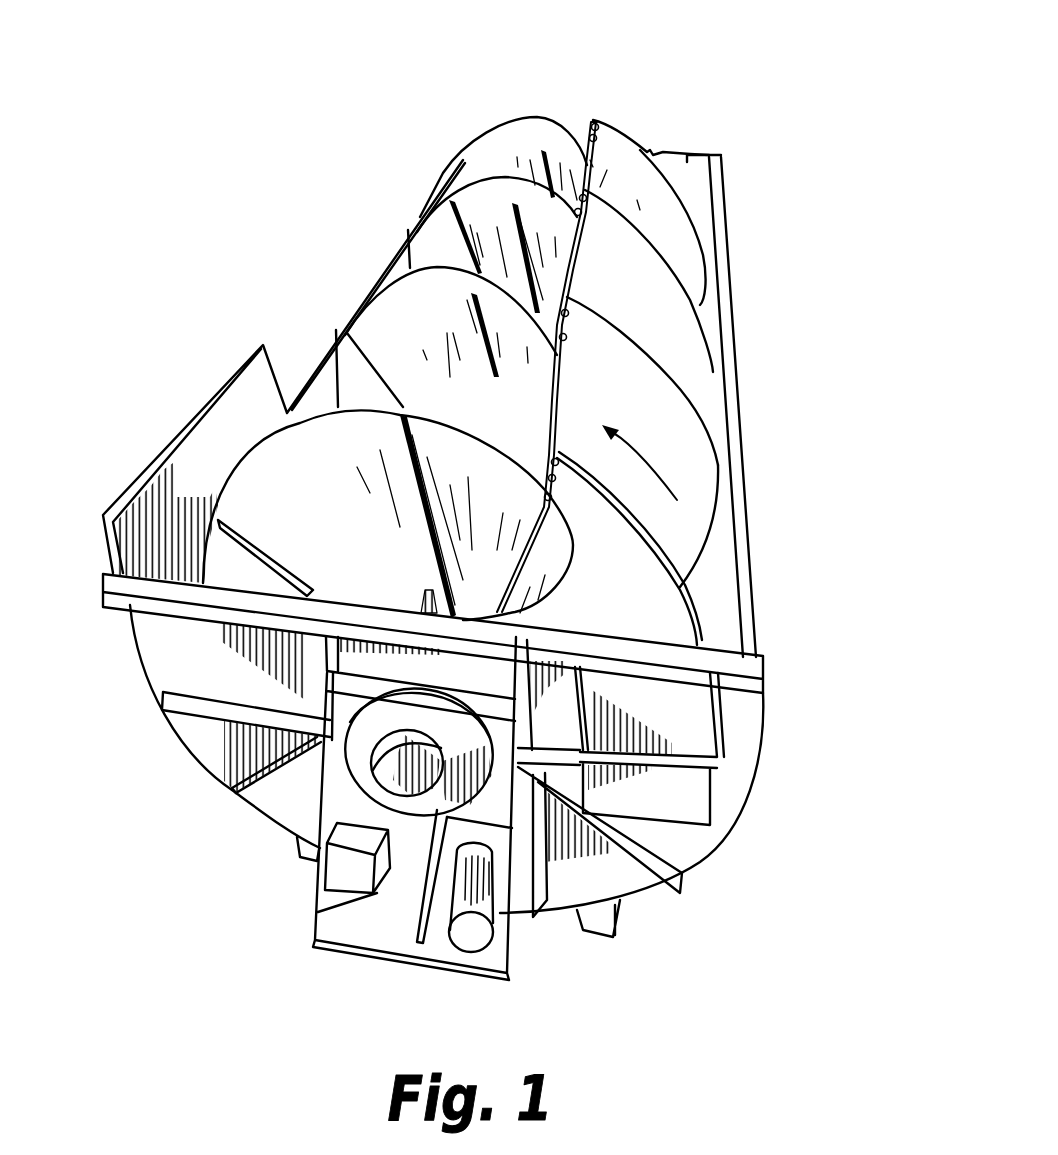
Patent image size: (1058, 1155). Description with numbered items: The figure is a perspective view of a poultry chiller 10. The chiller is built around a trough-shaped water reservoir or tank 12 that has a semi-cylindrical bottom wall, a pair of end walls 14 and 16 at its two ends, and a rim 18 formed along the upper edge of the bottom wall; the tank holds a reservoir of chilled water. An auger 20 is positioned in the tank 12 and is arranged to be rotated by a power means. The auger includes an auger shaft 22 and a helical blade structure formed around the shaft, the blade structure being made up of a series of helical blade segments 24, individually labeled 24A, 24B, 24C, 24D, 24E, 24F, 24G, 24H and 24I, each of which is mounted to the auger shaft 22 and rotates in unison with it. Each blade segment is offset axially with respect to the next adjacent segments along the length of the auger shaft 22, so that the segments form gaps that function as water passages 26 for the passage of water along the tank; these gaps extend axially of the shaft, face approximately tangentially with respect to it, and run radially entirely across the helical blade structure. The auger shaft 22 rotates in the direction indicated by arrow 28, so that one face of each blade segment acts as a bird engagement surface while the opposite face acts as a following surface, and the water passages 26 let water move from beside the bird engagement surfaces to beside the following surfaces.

The poultry chiller 10 is at (190, 196).
The tank 12 is at (741, 371).
The end wall 14 is at (743, 772).
The end wall 16 is at (704, 163).
The rim 18 is at (298, 375).
The auger 20 is at (503, 108).
The auger shaft 22 is at (423, 597).
The helical blade segment 24 is at (290, 440).
The helical blade segment 24A is at (700, 627).
The helical blade segment 24B is at (257, 485).
The helical blade segment 24C is at (712, 483).
The helical blade segment 24D is at (390, 316).
The helical blade segment 24E is at (697, 338).
The helical blade segment 24F is at (438, 238).
The helical blade segment 24G is at (683, 187).
The flight segment 24H is at (483, 157).
The flight segment 24I is at (684, 263).
The water passage 26 is at (605, 128).
The arrow indicating direction of rotation 28 is at (653, 460).